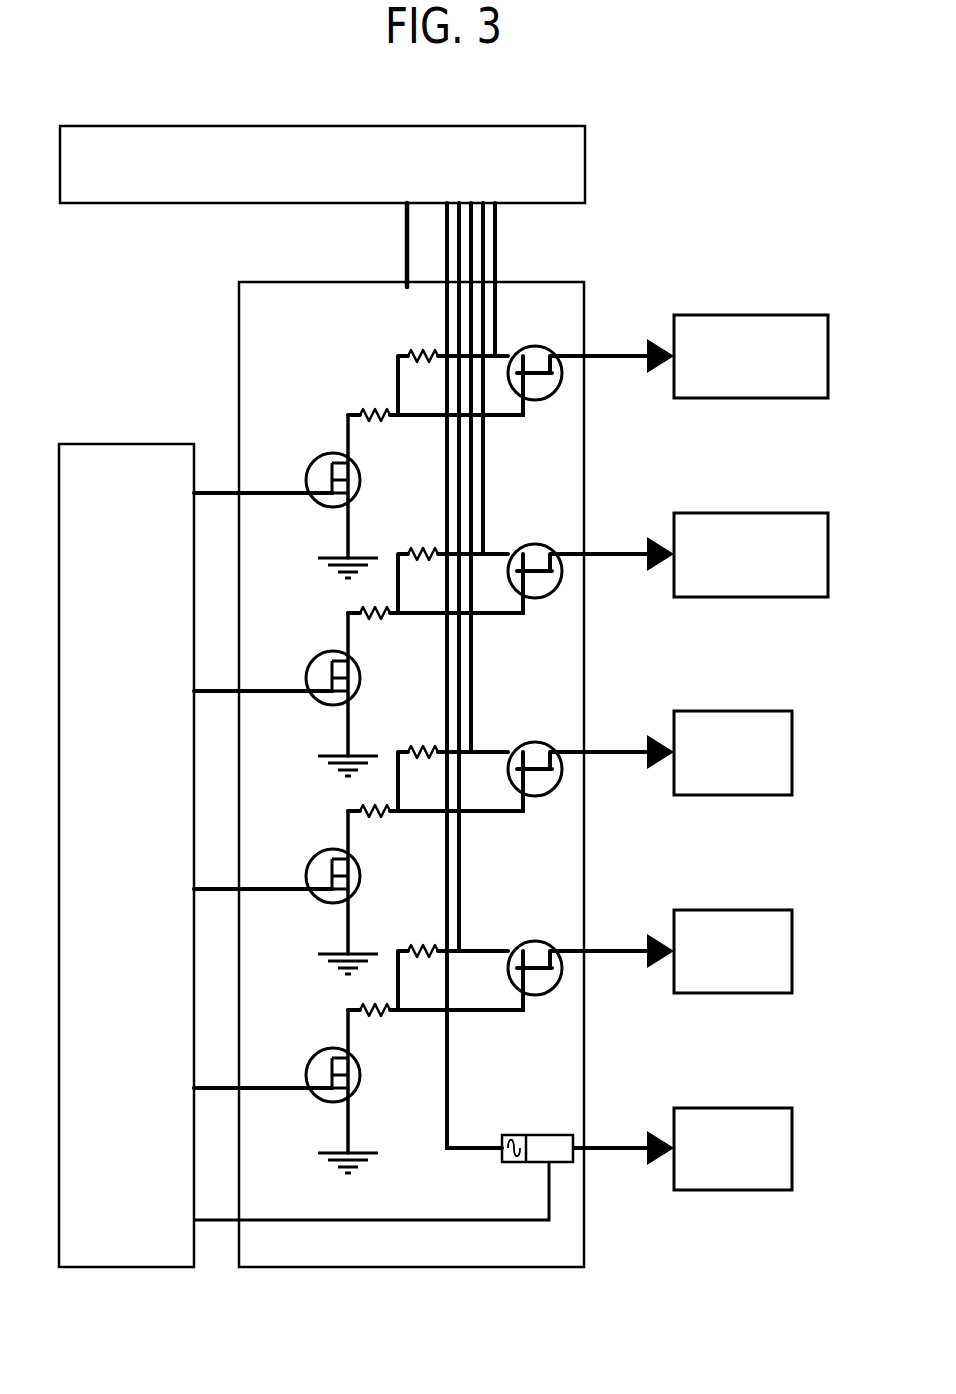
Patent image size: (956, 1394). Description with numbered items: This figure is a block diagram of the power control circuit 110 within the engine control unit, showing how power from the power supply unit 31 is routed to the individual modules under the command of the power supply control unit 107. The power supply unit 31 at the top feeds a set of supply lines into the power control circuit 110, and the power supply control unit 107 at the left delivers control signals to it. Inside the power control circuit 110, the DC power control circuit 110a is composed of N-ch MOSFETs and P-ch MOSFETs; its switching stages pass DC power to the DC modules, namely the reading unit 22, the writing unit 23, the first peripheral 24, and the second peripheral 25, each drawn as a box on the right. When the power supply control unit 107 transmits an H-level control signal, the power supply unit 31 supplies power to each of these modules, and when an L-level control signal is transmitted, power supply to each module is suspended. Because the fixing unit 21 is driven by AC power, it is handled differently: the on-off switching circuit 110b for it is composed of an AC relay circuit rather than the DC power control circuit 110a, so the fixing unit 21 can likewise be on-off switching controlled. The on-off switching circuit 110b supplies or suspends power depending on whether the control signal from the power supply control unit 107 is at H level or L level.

The power supply unit 31 is at (93, 126).
The power supply control unit 107 is at (95, 444).
The power control circuit 110 is at (274, 282).
The DC power control circuit 110a is at (402, 687).
The on-off switching circuit 110b is at (543, 1134).
The second peripheral 25 is at (713, 398).
The first peripheral 24 is at (714, 597).
The writing unit 23 is at (708, 795).
The reading unit 22 is at (708, 993).
The fixing unit 21 is at (708, 1190).